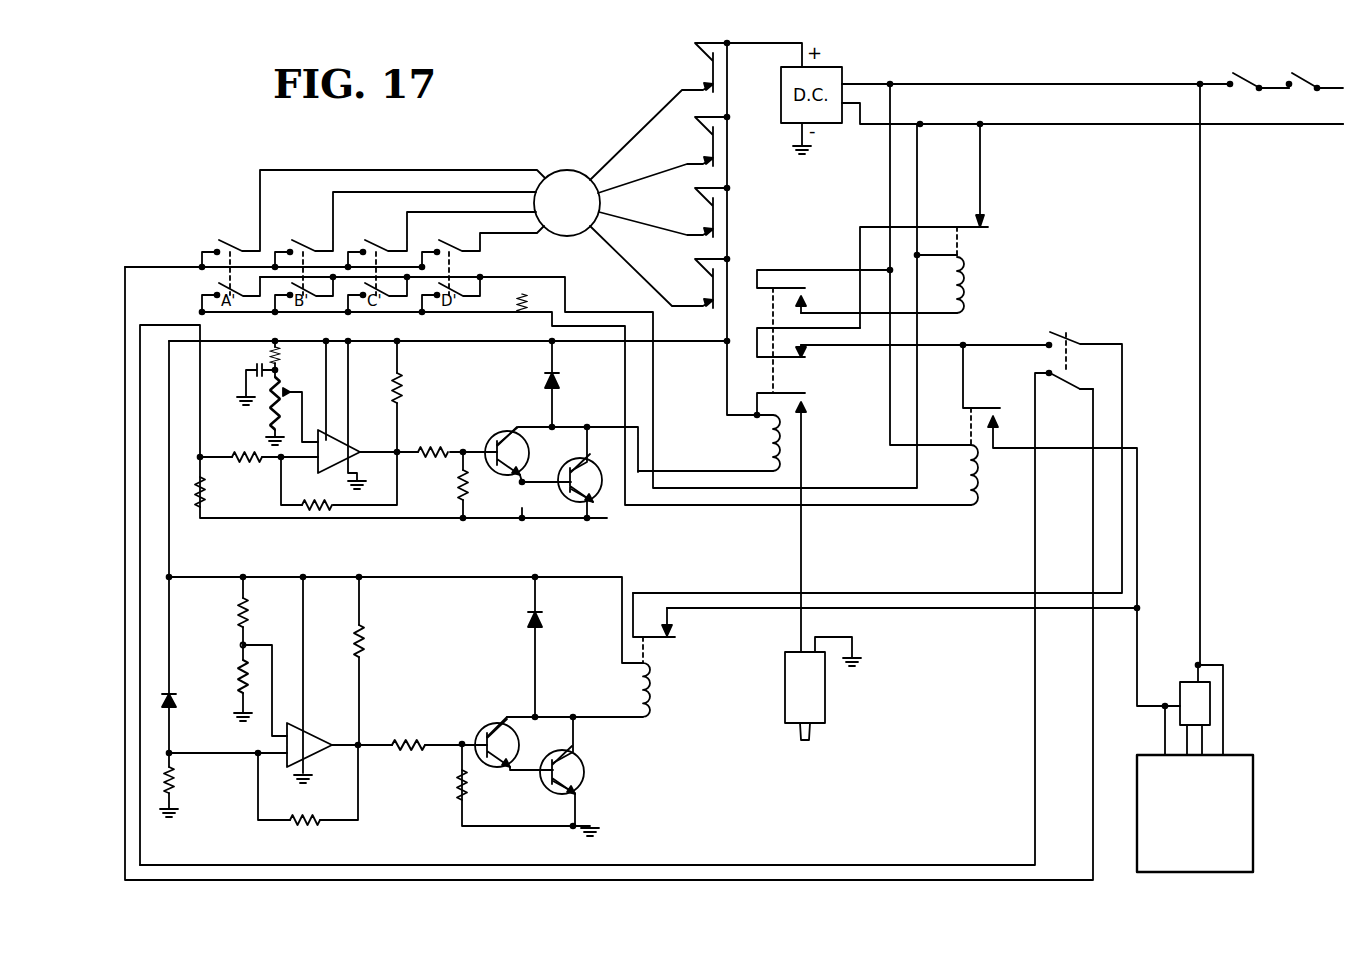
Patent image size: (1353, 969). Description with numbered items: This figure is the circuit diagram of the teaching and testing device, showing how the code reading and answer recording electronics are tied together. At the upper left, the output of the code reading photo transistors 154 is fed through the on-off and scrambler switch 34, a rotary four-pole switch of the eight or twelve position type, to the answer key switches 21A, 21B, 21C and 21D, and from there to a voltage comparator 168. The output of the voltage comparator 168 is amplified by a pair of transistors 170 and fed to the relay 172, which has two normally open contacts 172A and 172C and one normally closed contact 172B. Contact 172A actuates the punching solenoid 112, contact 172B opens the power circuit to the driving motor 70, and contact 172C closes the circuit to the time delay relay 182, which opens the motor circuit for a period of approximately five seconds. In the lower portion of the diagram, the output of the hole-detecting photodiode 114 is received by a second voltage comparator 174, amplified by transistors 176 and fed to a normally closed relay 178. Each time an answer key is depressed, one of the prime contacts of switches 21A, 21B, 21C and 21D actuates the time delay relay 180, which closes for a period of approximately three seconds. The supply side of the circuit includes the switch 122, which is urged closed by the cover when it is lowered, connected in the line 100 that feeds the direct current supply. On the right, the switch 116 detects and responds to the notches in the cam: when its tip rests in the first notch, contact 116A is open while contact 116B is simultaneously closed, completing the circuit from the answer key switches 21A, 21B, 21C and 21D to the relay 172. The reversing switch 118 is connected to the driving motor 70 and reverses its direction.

The answer key switch 21A is at (239, 238).
The answer key switch 21B is at (312, 238).
The answer key switch 21C is at (385, 238).
The answer key switch 21D is at (460, 240).
The on-off and scrambler switch 34 is at (557, 172).
The code reading photo transistors 154 is at (708, 72).
The power line 100 is at (1321, 112).
The switch 122 is at (1248, 74).
The time delay relay 182 is at (968, 284).
The relay 172 is at (768, 442).
The normally open contact 172A is at (808, 400).
The normally closed contact 172B is at (812, 352).
The normally open contact 172C is at (805, 302).
The switch 116 is at (1070, 360).
The switch contact 116A is at (1045, 338).
The switch contact 116B is at (1046, 374).
The time delay relay 180 is at (983, 482).
The voltage comparator 168 is at (348, 452).
The pair of transistors 170 is at (533, 440).
The solid state detector 114 is at (176, 699).
The voltage comparator 174 is at (310, 738).
The transistors 176 is at (549, 750).
The normally closed relay 178 is at (662, 687).
The punching solenoid 112 is at (827, 703).
The reversing switch 118 is at (1205, 697).
The driving motor 70 is at (1240, 812).